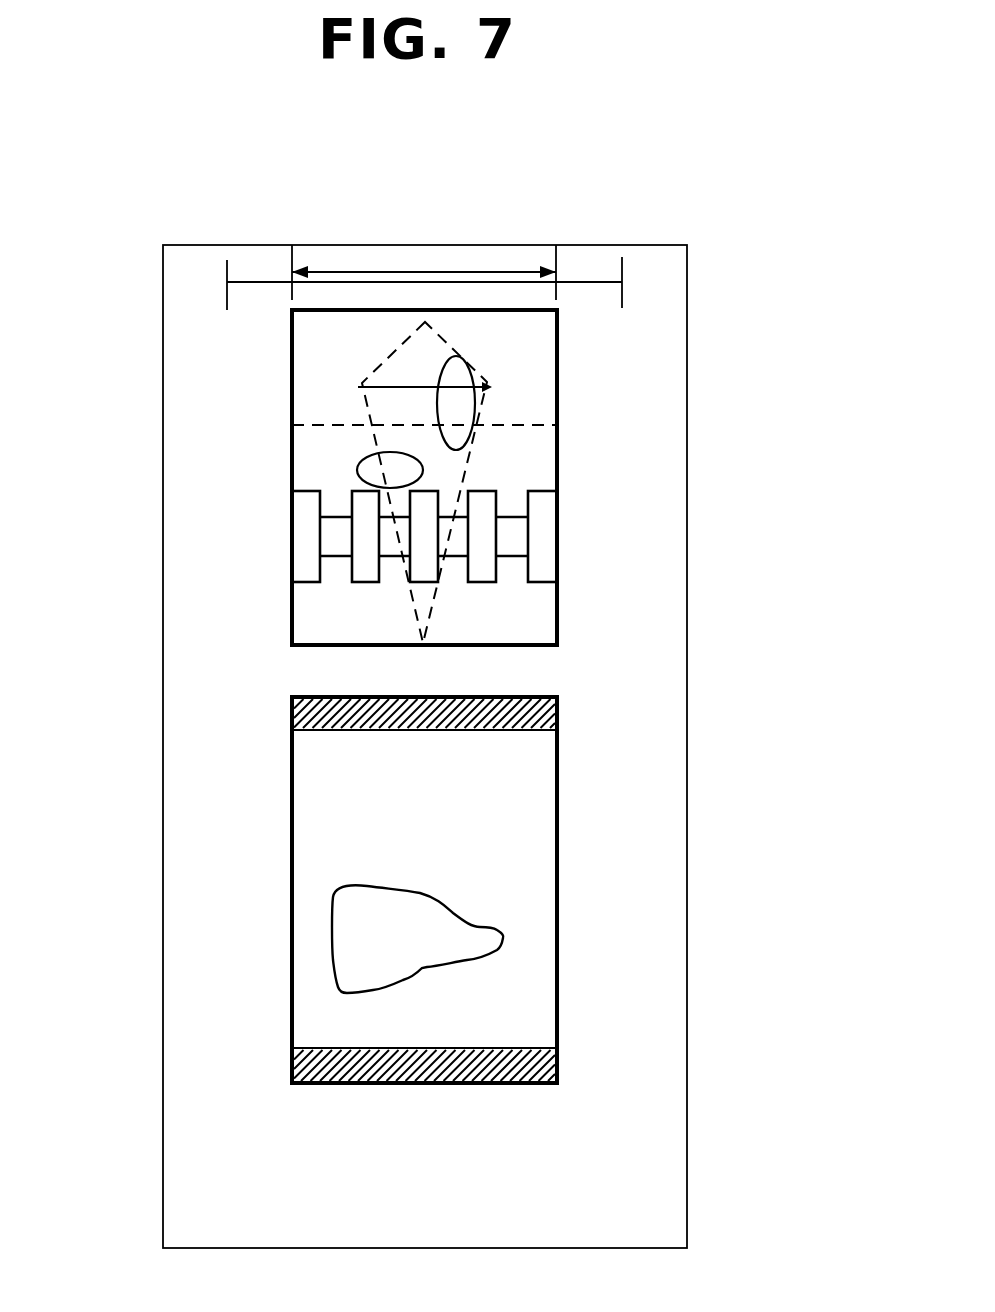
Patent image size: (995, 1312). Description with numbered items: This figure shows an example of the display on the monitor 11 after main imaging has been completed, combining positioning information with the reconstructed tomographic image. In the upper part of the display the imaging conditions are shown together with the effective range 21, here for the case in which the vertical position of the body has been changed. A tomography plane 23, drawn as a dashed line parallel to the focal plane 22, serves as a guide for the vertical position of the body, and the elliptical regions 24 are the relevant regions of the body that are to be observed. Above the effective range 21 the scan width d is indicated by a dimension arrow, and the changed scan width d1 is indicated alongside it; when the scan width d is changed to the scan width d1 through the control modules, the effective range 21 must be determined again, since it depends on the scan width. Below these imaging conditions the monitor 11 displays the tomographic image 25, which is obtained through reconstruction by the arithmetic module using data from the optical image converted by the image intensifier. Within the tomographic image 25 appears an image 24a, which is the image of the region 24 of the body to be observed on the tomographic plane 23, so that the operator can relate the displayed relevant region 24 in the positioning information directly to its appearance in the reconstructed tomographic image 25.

The monitor 11 is at (160, 528).
The effective range 21 is at (360, 424).
The focal plane 22 is at (462, 368).
The tomography plane 23 is at (332, 425).
The region to be observed 24 is at (358, 470).
The image of the region to be observed 24a is at (340, 920).
The tomographic image 25 is at (290, 867).
The scan width d is at (320, 274).
The changed scan width d1 is at (262, 283).